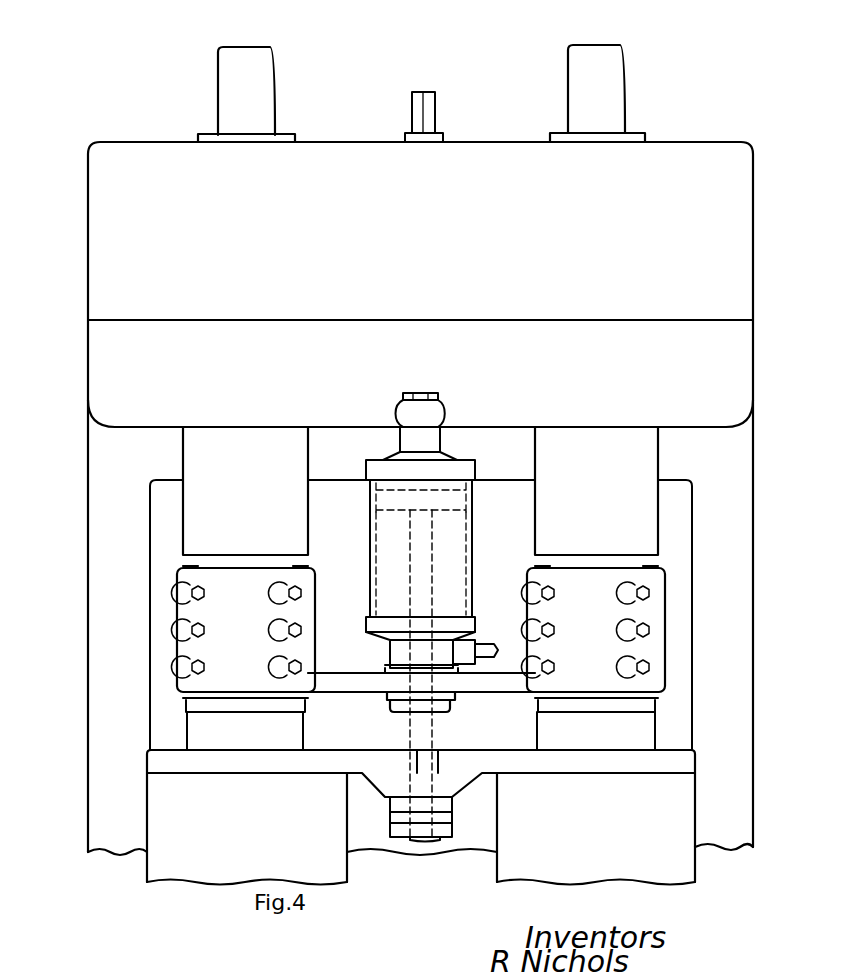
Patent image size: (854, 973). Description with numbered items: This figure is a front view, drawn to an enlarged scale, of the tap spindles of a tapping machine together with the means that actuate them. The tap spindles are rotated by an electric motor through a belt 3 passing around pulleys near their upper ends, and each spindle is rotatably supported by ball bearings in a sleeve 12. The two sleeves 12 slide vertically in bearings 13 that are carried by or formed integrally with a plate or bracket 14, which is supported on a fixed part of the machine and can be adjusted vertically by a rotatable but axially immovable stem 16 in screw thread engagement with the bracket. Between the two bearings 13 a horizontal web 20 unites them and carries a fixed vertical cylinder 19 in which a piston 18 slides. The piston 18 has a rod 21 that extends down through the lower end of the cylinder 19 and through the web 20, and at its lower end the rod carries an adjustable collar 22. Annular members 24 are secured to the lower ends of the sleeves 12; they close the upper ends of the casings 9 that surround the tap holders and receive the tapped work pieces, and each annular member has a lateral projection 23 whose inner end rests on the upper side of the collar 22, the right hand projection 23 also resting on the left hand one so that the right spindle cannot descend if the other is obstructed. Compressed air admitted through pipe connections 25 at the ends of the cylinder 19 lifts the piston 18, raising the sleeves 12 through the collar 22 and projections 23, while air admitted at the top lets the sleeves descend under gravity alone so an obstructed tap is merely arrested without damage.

The belt 3 is at (597, 80).
The casing 9 is at (152, 815).
The sleeve 12 is at (300, 728).
The bearing 13 is at (183, 614).
The plate or bracket 14 is at (157, 500).
The stem 16 is at (436, 112).
The piston 18 is at (458, 500).
The cylinder 19 is at (472, 558).
The web 20 is at (490, 686).
The rod 21 is at (425, 596).
The collar 22 is at (443, 803).
The lateral projection 23 is at (383, 752).
The annular member 24 is at (152, 764).
The pipe connection 25 is at (438, 410).